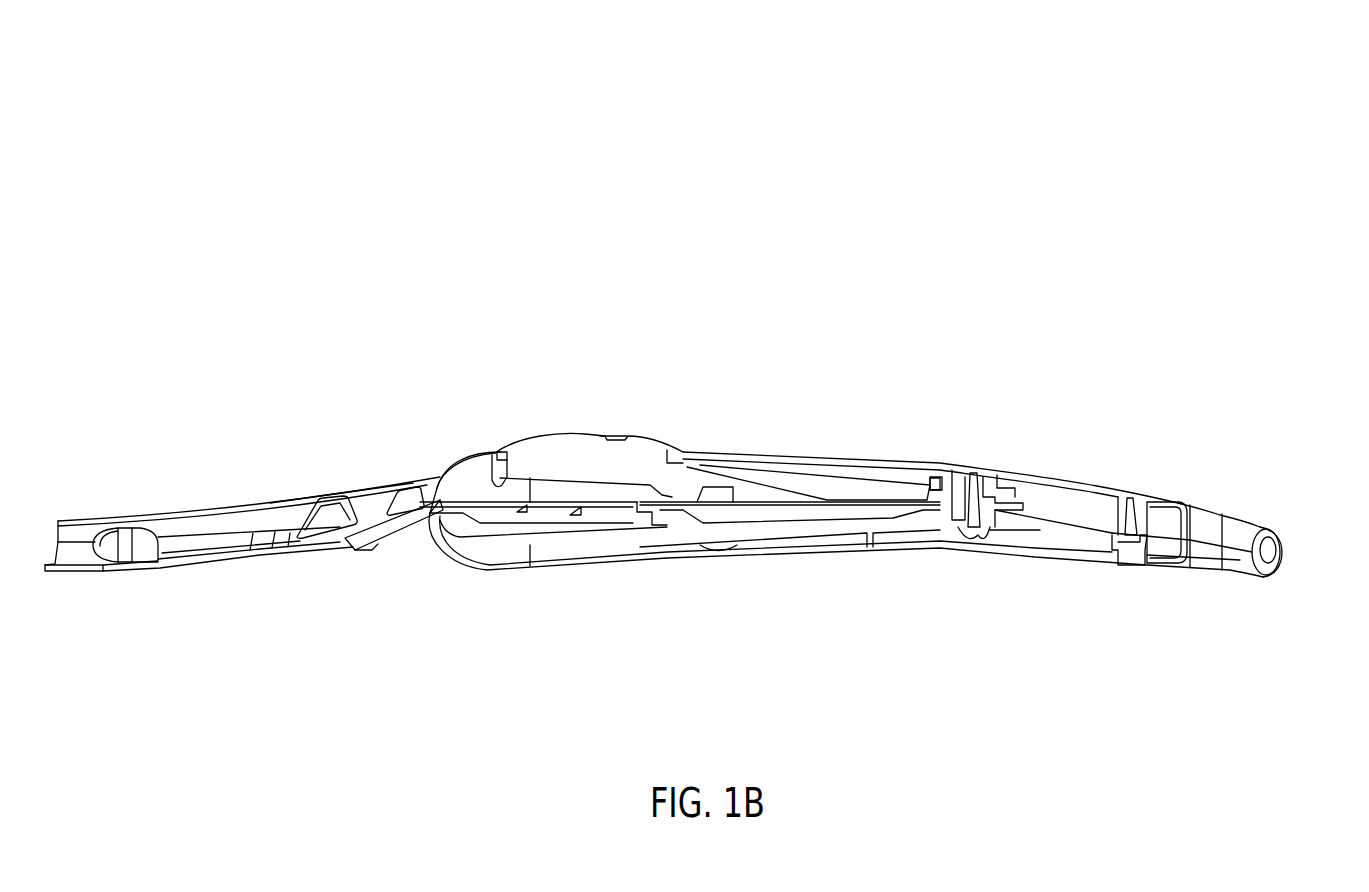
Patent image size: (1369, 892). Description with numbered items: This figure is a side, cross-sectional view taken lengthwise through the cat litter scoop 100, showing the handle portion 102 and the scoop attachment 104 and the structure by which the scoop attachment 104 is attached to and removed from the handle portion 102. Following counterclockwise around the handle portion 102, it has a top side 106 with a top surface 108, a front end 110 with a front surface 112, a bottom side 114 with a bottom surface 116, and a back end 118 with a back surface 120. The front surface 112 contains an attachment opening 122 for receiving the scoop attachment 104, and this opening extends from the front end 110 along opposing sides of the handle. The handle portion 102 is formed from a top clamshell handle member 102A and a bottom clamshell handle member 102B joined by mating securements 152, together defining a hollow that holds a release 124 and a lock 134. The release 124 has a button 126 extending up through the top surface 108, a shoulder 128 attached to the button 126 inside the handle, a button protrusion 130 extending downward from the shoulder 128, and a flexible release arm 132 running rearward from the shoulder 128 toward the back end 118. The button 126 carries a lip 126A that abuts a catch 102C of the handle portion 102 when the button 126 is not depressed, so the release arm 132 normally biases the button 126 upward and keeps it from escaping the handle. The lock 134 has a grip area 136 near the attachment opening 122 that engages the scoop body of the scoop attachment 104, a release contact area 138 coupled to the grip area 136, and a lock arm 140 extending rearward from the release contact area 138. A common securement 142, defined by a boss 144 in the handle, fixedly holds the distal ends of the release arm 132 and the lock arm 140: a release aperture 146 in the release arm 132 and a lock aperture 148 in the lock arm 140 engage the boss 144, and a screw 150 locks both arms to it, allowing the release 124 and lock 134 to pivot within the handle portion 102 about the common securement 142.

The cat litter scoop 100 is at (178, 118).
The handle portion 102 is at (431, 582).
The top clamshell handle member 102A is at (1093, 483).
The bottom clamshell handle member 102B is at (1083, 563).
The catch 102C is at (492, 452).
The scoop attachment 104 is at (271, 571).
The top side 106 is at (965, 305).
The top surface 108 is at (888, 458).
The front end 110 is at (367, 372).
The front surface 112 is at (437, 463).
The bottom side 114 is at (776, 636).
The bottom surface 116 is at (824, 562).
The back end 118 is at (1288, 514).
The back surface 120 is at (1287, 548).
The attachment opening 122 is at (406, 531).
The release 124 is at (562, 434).
The button 126 is at (538, 452).
The lip 126A is at (495, 452).
The shoulder 128 is at (692, 481).
The button protrusion 130 is at (735, 455).
The release arm 132 is at (780, 482).
The lock 134 is at (565, 533).
The grip area 136 is at (512, 508).
The release contact area 138 is at (668, 533).
The lock arm 140 is at (730, 533).
The common securement 142 is at (968, 550).
The boss 144 is at (958, 477).
The release aperture 146 is at (945, 477).
The lock aperture 148 is at (995, 518).
The screw 150 is at (957, 548).
The mating securements 152 is at (1138, 498).